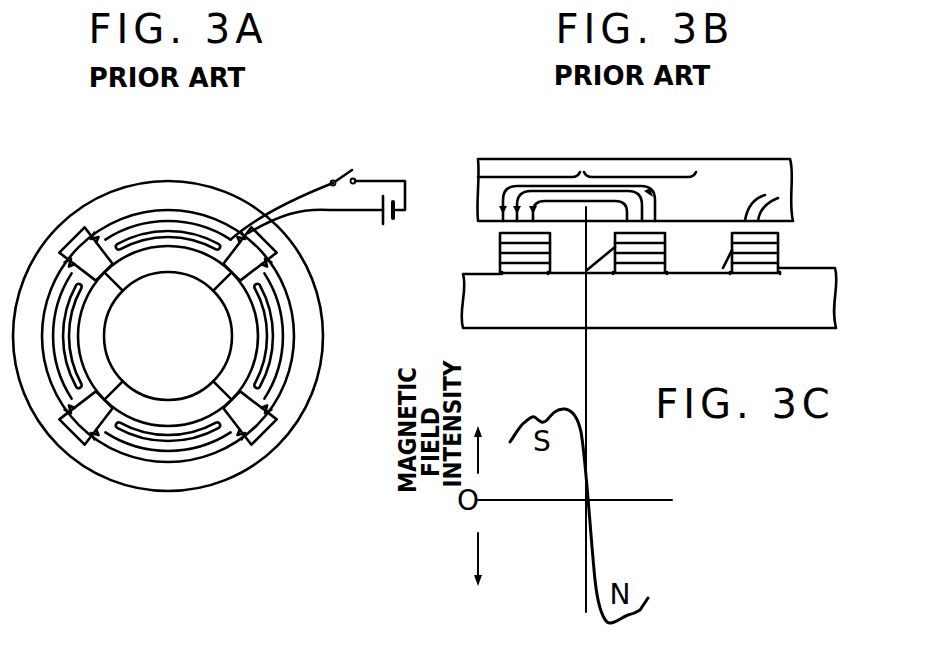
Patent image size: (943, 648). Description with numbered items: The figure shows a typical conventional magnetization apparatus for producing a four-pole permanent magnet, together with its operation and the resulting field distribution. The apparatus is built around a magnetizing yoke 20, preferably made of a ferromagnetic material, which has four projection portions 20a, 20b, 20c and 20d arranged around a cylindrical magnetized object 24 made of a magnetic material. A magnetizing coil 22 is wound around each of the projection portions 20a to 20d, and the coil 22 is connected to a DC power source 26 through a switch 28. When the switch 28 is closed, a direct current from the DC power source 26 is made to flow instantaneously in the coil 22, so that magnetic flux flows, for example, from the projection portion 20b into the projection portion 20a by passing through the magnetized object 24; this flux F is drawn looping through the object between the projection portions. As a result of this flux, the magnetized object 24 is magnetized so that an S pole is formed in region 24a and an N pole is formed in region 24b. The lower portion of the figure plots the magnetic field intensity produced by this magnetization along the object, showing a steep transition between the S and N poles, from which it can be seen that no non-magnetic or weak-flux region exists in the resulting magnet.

In FIG. 3A, the magnetizing yoke 20 is at (313, 362).
In FIG. 3B, the magnetizing yoke 20 is at (463, 305).
In FIG. 3A, the projection portion 20a is at (277, 362).
In FIG. 3B, the projection portion 20a is at (527, 277).
In FIG. 3A, the projection portion 20b is at (200, 467).
In FIG. 3B, the projection portion 20b is at (648, 277).
In FIG. 3A, the projection portion 20c is at (38, 360).
In FIG. 3B, the projection portion 20c is at (762, 277).
In FIG. 3A, the projection portion 20d is at (182, 197).
In FIG. 3A, the magnetizing coil 22 is at (310, 212).
In FIG. 3B, the magnetizing coil 22 is at (500, 262).
In FIG. 3A, the magnetized object 24 is at (240, 303).
In FIG. 3B, the magnetized object 24 is at (685, 165).
In FIG. 3B, the region of the magnetized object 24a is at (528, 176).
In FIG. 3B, the region of the magnetized object 24b is at (632, 176).
In FIG. 3A, the DC power source 26 is at (405, 222).
In FIG. 3A, the switch 28 is at (357, 172).
In FIG. 3B, the magnetic flux F is at (657, 211).